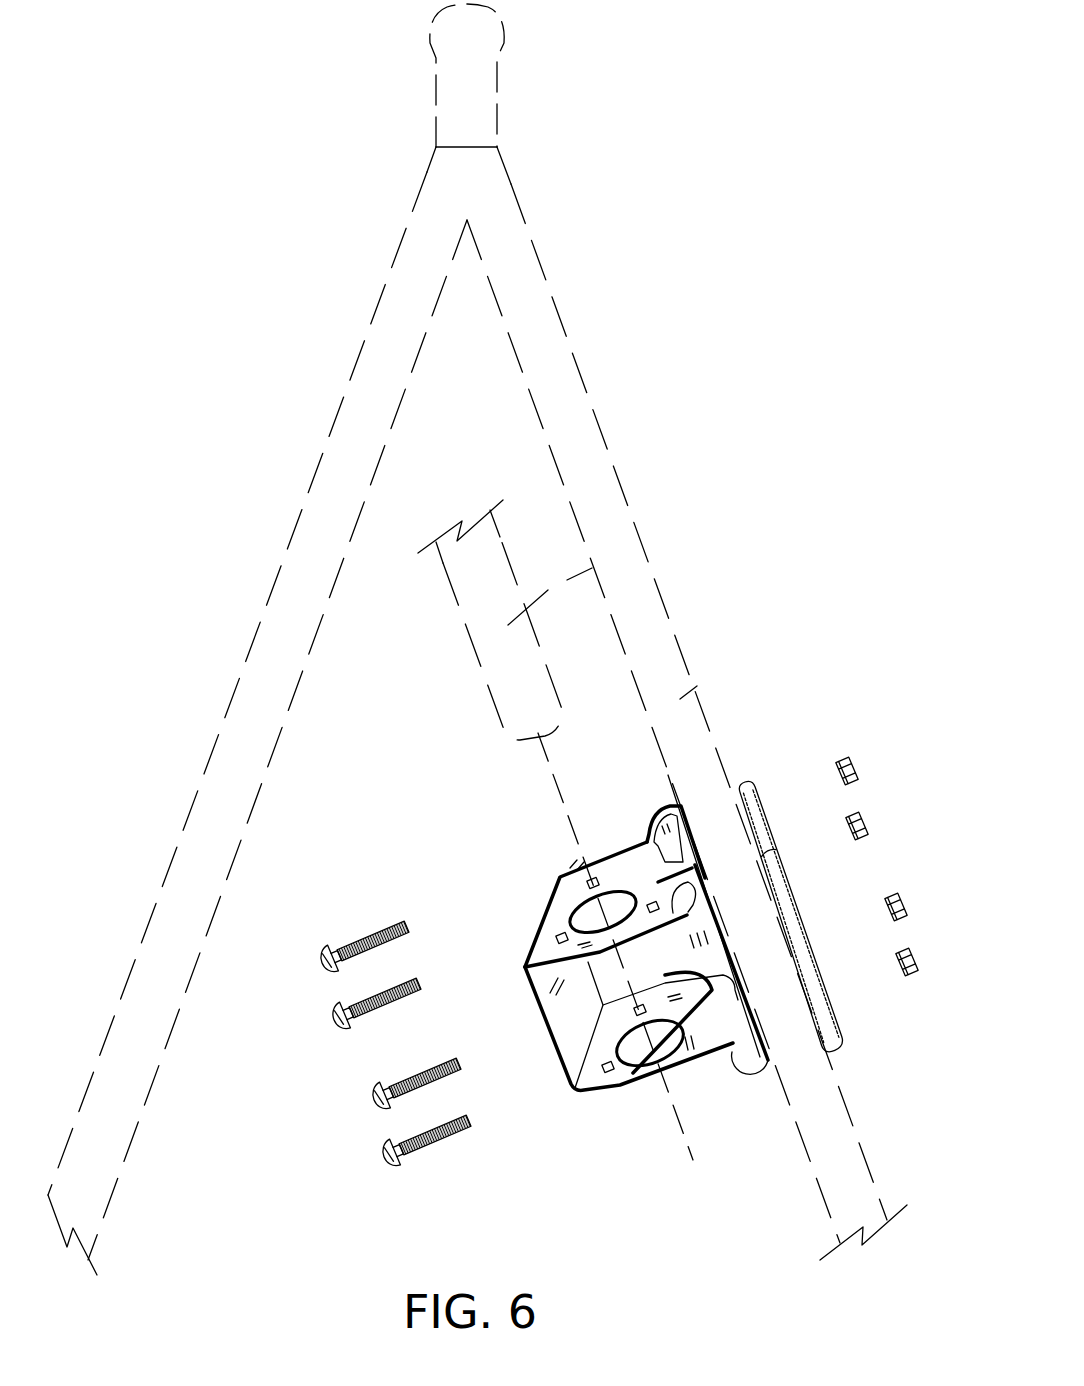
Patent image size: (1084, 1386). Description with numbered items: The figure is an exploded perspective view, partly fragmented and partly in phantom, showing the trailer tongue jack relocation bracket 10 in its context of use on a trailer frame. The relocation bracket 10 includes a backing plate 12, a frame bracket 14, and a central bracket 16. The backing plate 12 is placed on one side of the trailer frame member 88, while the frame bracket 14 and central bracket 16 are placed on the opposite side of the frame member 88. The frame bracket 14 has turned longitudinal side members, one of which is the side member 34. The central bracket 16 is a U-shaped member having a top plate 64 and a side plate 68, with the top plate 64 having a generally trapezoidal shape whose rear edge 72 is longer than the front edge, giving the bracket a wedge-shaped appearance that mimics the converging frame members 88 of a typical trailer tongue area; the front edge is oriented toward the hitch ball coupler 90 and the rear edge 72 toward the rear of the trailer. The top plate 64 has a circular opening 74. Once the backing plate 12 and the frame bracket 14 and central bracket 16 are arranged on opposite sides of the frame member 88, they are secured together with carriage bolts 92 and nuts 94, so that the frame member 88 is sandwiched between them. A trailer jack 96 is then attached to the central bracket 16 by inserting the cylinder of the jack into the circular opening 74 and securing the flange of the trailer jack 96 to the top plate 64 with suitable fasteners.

The trailer tongue jack relocation bracket 10 is at (673, 1222).
The backing plate 12 is at (845, 1043).
The frame bracket 14 is at (756, 1080).
The central bracket 16 is at (613, 1104).
The longitudinal side member 34 is at (725, 1020).
The top plate 64 is at (626, 855).
The side plate 68 is at (540, 1018).
The rear edge 72 is at (588, 962).
The circular opening 74 is at (560, 877).
The trailer frame member 88 is at (682, 698).
The hitch ball coupler 90 is at (480, 85).
The carriage bolts 92 is at (358, 1020).
The nuts 94 is at (867, 822).
The trailer jack 96 is at (627, 552).